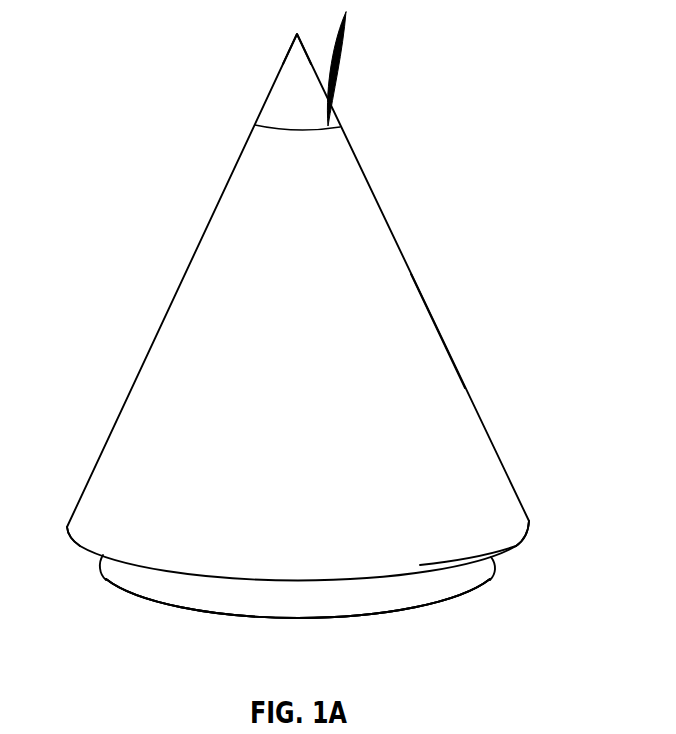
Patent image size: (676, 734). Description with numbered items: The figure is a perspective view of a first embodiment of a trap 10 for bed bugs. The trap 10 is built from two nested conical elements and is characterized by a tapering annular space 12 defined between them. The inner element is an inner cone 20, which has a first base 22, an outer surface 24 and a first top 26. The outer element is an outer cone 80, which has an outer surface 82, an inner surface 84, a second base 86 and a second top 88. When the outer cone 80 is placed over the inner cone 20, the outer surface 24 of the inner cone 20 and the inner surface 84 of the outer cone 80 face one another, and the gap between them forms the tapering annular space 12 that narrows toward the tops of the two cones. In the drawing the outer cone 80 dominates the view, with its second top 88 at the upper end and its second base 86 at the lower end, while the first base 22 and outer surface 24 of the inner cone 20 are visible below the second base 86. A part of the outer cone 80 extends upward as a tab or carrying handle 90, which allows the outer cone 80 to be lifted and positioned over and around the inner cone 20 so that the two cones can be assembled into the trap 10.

The trap 10 is at (200, 162).
The tapering annular space 12 is at (355, 588).
The inner cone 20 is at (99, 562).
The first base 22 is at (238, 618).
The outer surface 24 is at (457, 588).
The first top 26 is at (281, 70).
The outer cone 80 is at (430, 314).
The outer surface 82 is at (447, 378).
The inner surface 84 is at (510, 543).
The second base 86 is at (82, 542).
The second top 88 is at (280, 126).
The carrying handle 90 is at (335, 78).